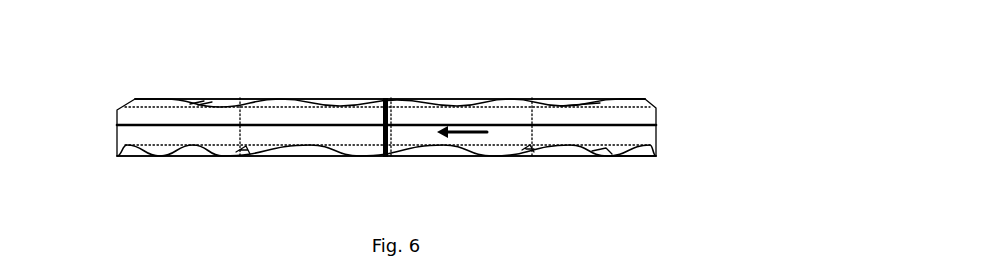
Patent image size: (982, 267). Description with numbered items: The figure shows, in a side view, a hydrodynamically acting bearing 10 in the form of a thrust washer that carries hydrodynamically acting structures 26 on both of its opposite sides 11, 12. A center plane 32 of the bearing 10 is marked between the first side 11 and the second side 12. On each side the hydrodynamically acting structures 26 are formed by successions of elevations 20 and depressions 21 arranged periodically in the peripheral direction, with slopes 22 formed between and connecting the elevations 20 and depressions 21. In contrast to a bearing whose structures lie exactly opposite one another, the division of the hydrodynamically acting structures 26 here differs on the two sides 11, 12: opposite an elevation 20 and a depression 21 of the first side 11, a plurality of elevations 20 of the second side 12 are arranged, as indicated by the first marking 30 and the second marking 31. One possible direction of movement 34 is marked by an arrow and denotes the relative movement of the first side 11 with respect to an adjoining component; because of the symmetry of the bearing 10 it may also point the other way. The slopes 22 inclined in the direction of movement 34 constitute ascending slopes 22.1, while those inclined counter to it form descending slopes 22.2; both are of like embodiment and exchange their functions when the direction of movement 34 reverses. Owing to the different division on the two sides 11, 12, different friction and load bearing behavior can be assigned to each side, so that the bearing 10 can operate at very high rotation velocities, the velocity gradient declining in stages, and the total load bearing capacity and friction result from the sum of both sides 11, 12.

The hydrodynamically acting bearing 10 is at (65, 72).
The first side 11 is at (118, 68).
The second side 12 is at (130, 168).
The elevation 20 is at (152, 98).
The depression 21 is at (245, 108).
The slope 22 is at (193, 103).
The ascending slope 22.1 is at (580, 107).
The descending slope 22.2 is at (457, 103).
The hydrodynamically acting structure 26 is at (603, 72).
The first marking 30 is at (396, 99).
The second marking 31 is at (396, 148).
The center plane 32 is at (117, 124).
The direction of movement 34 is at (468, 133).